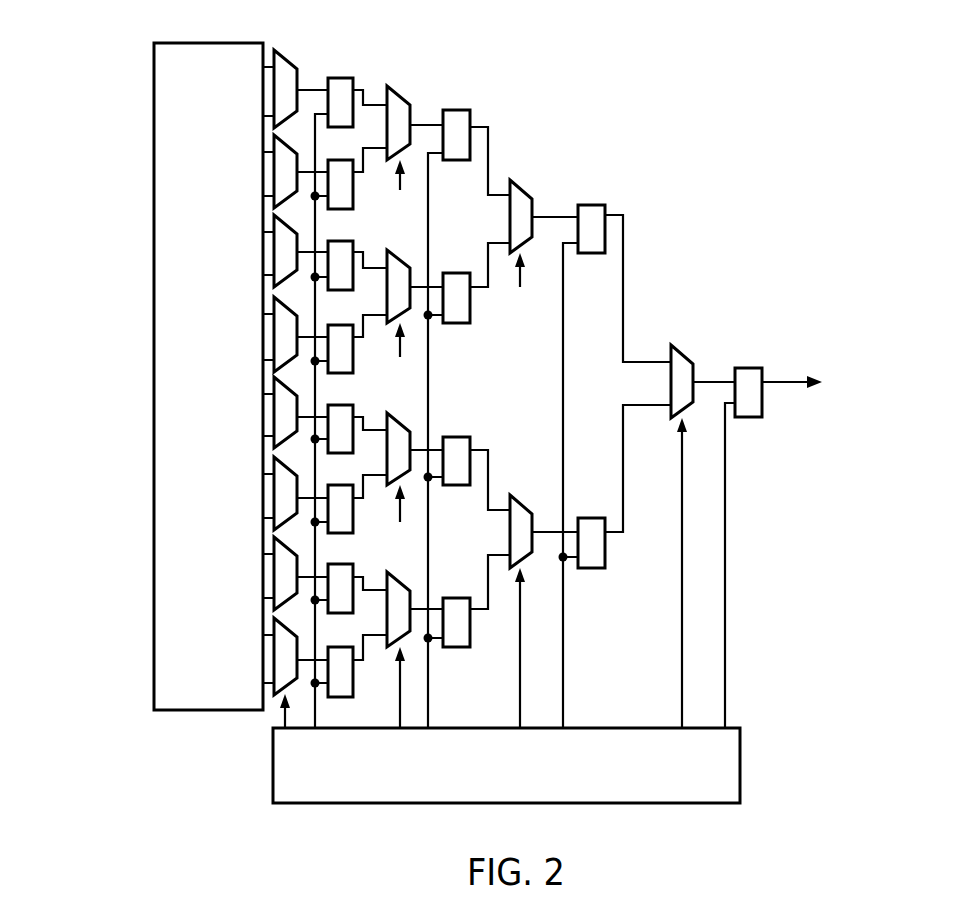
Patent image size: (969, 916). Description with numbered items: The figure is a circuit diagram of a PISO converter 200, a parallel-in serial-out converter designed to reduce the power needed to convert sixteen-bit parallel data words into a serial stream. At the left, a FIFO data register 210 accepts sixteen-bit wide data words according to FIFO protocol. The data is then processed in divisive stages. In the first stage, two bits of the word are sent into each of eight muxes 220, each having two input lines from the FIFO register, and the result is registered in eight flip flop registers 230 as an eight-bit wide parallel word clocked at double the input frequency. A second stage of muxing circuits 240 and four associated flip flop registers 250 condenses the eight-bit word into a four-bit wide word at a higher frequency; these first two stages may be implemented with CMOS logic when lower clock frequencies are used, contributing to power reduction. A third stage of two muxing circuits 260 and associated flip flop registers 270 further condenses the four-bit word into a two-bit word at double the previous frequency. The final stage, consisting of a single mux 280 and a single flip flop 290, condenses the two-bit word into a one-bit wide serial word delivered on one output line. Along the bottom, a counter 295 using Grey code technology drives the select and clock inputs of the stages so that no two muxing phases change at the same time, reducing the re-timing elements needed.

The PISO converter 200 is at (116, 65).
The FIFO data register 210 is at (226, 638).
The muxes 220 is at (283, 57).
The flip flop registers 230 is at (342, 78).
The muxing circuits 240 is at (400, 92).
The flip flop registers 250 is at (458, 110).
The muxing circuits 260 is at (522, 183).
The flip flop registers 270 is at (593, 203).
The mux 280 is at (680, 353).
The flip flop 290 is at (745, 367).
The counter 295 is at (662, 777).